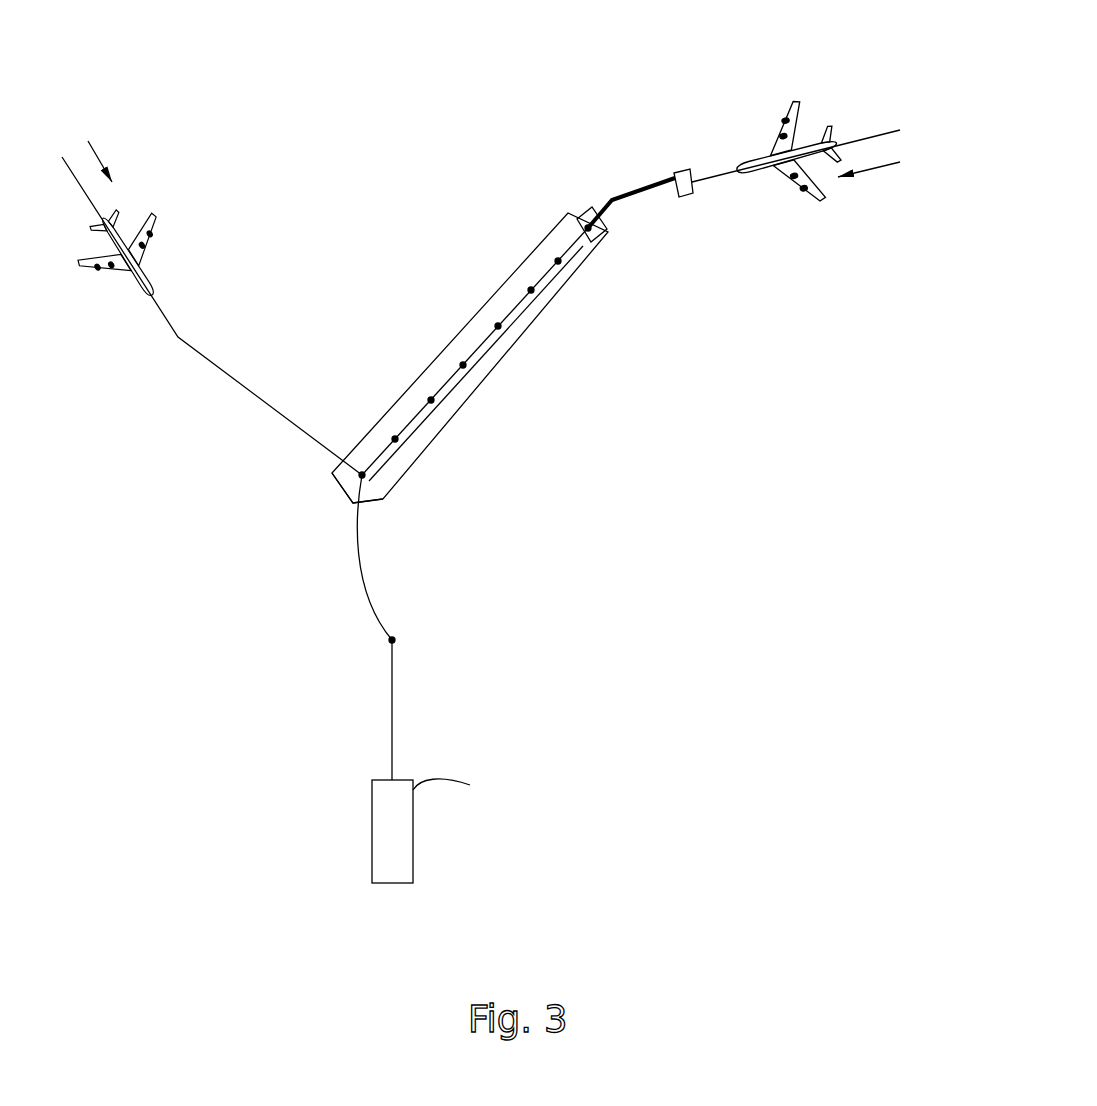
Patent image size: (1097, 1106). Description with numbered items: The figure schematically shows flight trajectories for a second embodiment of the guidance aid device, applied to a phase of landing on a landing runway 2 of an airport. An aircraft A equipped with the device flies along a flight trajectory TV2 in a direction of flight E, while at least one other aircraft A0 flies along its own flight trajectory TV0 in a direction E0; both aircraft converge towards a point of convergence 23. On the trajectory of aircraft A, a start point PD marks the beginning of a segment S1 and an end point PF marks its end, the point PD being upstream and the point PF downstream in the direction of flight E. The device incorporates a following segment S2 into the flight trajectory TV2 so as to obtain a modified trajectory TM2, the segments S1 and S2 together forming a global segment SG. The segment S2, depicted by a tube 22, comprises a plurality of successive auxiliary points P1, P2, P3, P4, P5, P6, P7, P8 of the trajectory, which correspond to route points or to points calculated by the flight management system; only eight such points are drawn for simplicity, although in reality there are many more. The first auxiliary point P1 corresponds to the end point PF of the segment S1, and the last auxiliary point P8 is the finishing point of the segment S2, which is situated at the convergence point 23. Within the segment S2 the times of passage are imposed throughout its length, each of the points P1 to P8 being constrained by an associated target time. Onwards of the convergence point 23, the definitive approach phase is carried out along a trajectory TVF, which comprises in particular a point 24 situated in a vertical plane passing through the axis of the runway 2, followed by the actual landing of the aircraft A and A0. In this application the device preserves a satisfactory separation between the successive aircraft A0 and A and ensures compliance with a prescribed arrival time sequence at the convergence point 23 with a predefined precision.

The direction of flight of the other aircraft E0 is at (98, 155).
The other aircraft A0 is at (115, 230).
The flight trajectory of the other aircraft TV0 is at (213, 360).
The tube 22 is at (392, 406).
The point of convergence 23 is at (362, 475).
The global segment SG is at (525, 203).
The segment S2 is at (502, 310).
The auxiliary point P1 is at (588, 223).
The auxiliary point P2 is at (560, 263).
The auxiliary point P3 is at (533, 292).
The auxiliary point P4 is at (500, 328).
The auxiliary point P5 is at (465, 367).
The auxiliary point P6 is at (433, 402).
The auxiliary point P7 is at (397, 441).
The auxiliary point P8 is at (362, 475).
The end point PF is at (610, 230).
The segment S1 is at (627, 187).
The start point PD is at (687, 197).
The modified trajectory TM2 is at (707, 167).
The flight trajectory TV2 is at (863, 128).
The aircraft A is at (807, 143).
The direction of flight E is at (880, 173).
The trajectory TVF is at (367, 605).
The point 24 is at (395, 637).
The landing runway 2 is at (415, 830).